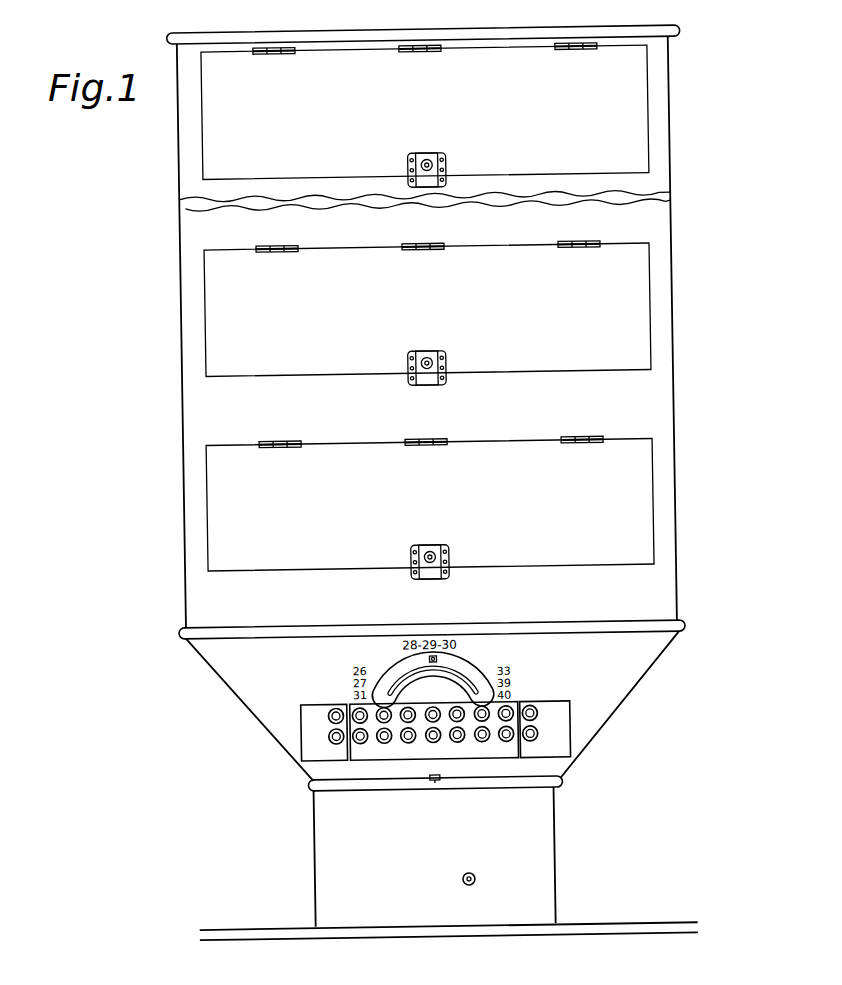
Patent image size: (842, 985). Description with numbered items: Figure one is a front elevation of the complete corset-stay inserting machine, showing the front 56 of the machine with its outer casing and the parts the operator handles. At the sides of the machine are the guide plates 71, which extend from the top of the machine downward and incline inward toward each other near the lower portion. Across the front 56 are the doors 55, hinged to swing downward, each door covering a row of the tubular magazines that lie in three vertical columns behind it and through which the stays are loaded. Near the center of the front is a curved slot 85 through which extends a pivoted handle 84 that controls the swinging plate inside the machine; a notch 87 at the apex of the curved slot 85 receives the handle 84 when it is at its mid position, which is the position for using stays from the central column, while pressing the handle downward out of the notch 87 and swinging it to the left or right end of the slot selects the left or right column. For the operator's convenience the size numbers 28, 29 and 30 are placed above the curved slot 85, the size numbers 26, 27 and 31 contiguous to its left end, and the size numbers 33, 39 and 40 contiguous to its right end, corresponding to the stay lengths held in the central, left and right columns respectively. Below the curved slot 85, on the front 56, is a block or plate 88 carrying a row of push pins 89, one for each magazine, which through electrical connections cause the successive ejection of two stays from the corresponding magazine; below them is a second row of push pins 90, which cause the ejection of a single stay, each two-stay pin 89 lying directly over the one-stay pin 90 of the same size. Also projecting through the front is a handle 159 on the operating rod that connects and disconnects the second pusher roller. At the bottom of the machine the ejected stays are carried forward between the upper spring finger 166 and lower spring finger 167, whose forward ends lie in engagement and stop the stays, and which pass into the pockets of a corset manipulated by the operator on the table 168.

The guide plates 71 is at (399, 34).
The doors 55 is at (641, 148).
The front 56 is at (658, 407).
The pivoted handle 84 is at (435, 660).
The curved slot 85 is at (457, 672).
The notch 87 is at (427, 660).
The block or plate 88 is at (540, 706).
The push pins 89 is at (330, 710).
The push pins 90 is at (329, 736).
The handle 159 is at (472, 874).
The upper spring finger 166 is at (436, 774).
The lower spring finger 167 is at (434, 782).
The table 168 is at (368, 779).
The size number 26 is at (324, 732).
The size number 27 is at (360, 733).
The size number 28 is at (408, 732).
The size number 29 is at (433, 732).
The size number 30 is at (457, 731).
The size number 31 is at (384, 733).
The size number 33 is at (482, 731).
The size number 39 is at (506, 731).
The size number 40 is at (530, 730).